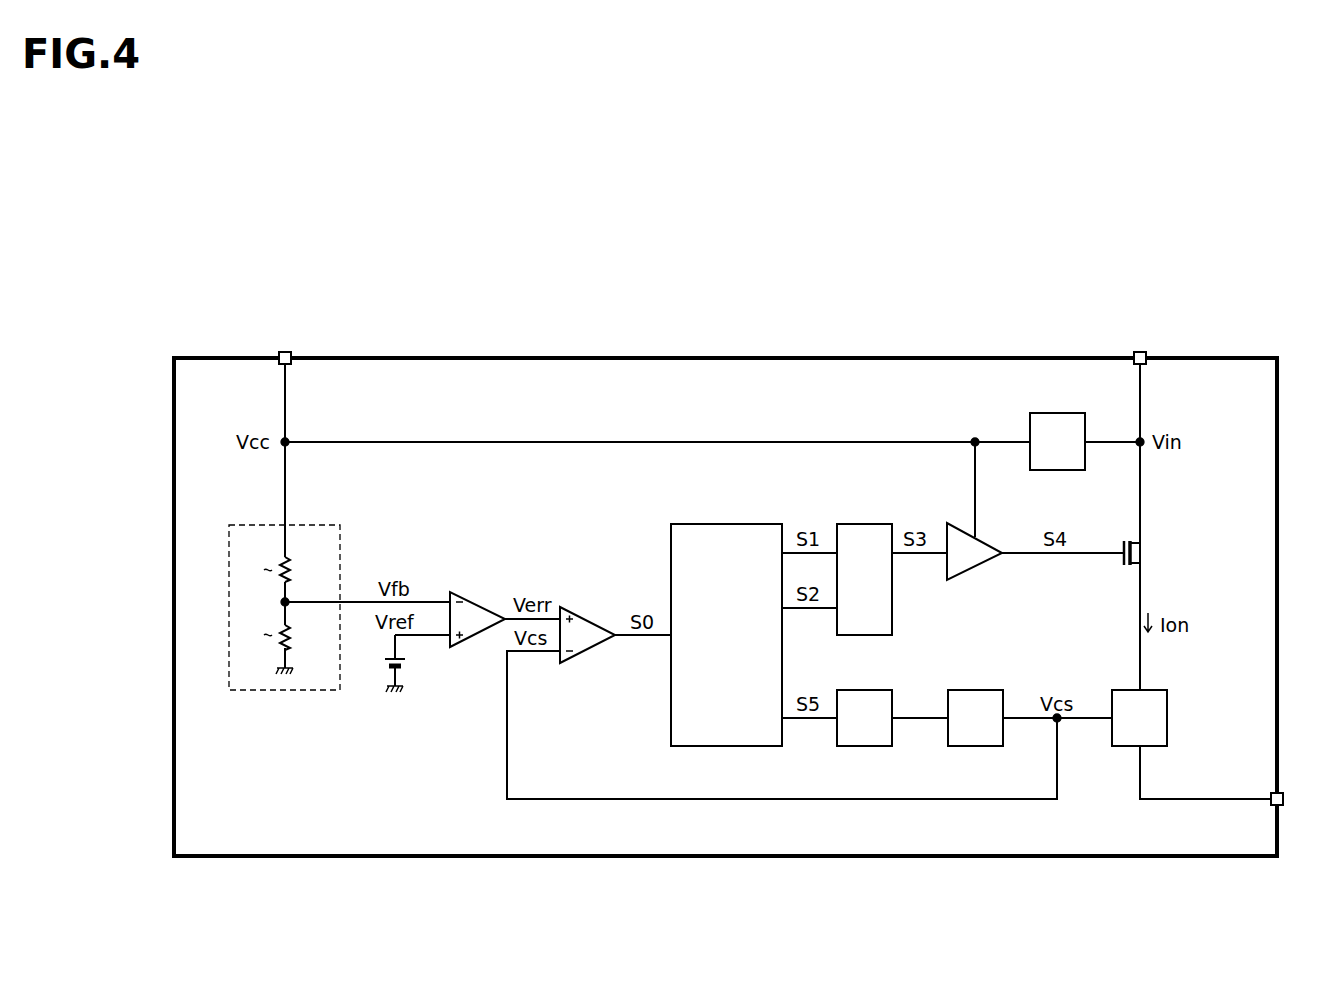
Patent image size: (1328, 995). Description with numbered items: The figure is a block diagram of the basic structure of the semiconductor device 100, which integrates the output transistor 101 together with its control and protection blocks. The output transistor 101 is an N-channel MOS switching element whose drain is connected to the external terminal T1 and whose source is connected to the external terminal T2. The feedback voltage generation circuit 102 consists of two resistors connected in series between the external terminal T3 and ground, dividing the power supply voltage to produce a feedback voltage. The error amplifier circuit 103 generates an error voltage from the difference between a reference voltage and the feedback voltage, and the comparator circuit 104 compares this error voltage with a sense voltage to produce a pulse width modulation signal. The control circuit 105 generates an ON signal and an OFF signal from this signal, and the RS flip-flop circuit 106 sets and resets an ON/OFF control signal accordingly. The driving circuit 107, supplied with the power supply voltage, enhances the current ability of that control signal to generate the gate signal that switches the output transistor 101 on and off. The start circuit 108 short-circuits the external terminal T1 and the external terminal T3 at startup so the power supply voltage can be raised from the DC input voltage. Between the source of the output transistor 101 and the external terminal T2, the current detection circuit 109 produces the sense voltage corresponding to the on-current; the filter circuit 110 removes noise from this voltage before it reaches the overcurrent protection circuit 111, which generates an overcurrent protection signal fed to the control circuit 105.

The semiconductor device 100 is at (725, 357).
The output transistor 101 is at (1143, 557).
The feedback voltage generation circuit 102 is at (311, 525).
The error amplifier circuit 103 is at (480, 596).
The comparator circuit 104 is at (589, 612).
The control circuit 105 is at (726, 525).
The RS flip-flop circuit 106 is at (866, 525).
The driving circuit 107 is at (975, 580).
The start circuit 108 is at (1058, 413).
The current detection circuit 109 is at (1169, 719).
The filter circuit 110 is at (976, 690).
The overcurrent protection circuit 111 is at (866, 690).
The external terminal T1 is at (1146, 351).
The external terminal T2 is at (1284, 792).
The external terminal T3 is at (291, 352).